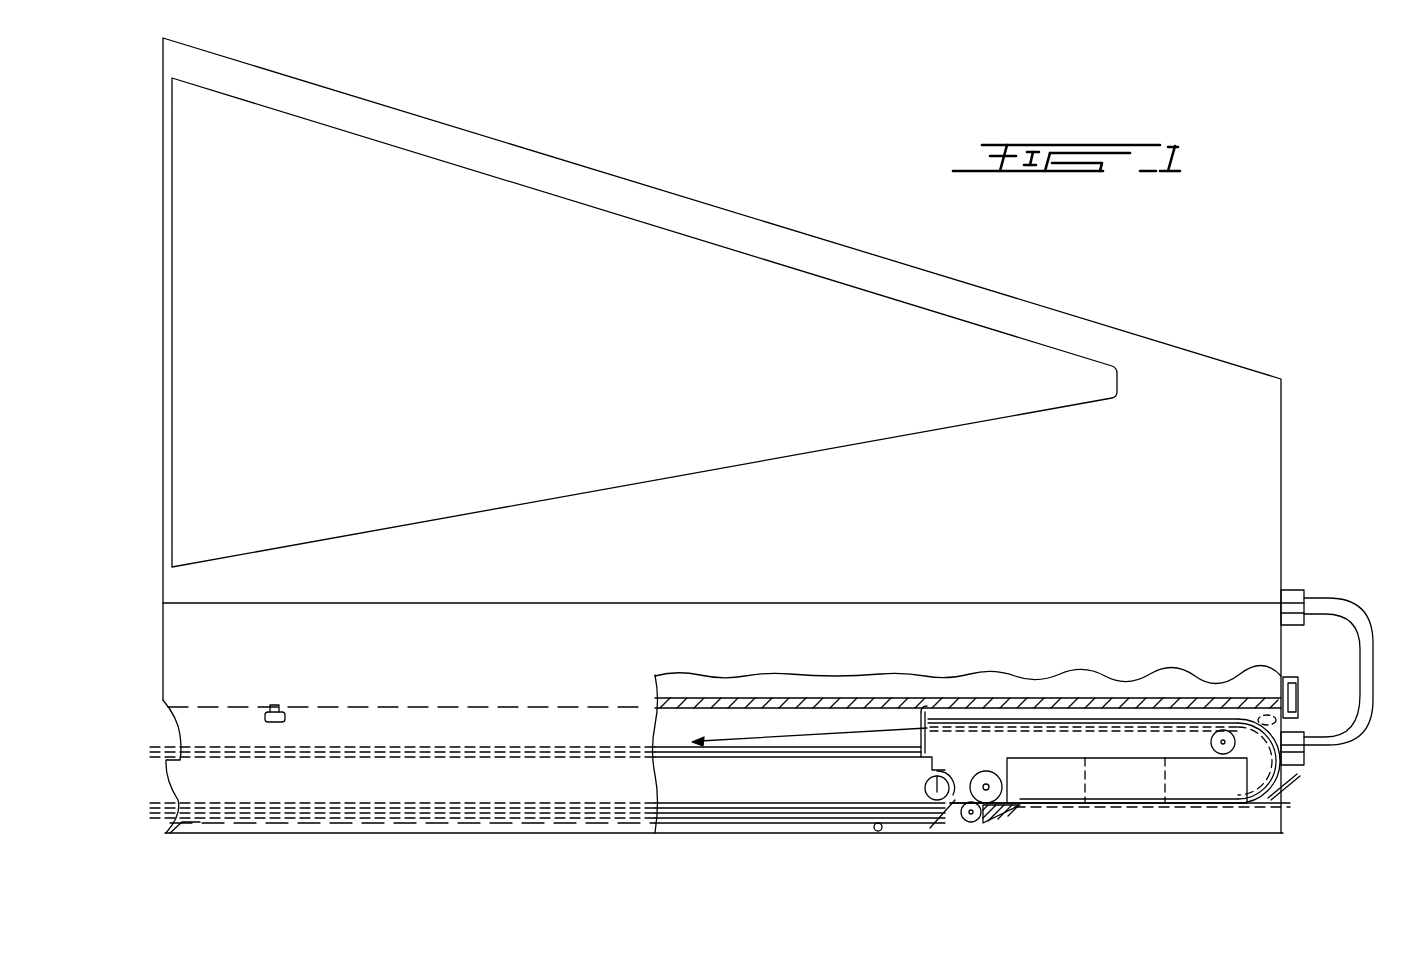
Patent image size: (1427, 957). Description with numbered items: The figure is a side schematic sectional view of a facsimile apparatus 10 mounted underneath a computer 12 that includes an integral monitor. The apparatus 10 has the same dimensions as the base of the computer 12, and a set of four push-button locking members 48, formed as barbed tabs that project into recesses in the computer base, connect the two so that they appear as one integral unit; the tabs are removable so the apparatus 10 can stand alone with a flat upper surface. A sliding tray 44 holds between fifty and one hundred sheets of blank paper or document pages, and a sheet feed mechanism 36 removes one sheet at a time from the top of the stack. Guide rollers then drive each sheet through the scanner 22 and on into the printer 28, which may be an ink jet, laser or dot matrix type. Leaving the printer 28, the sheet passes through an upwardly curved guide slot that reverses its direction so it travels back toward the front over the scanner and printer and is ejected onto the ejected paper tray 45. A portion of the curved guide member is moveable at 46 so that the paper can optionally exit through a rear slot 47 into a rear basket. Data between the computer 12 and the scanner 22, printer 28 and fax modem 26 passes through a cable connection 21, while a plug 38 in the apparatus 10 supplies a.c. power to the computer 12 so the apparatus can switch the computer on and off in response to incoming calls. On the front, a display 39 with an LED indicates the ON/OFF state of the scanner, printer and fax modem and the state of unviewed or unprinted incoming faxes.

The facsimile apparatus 10 is at (420, 836).
The computer 12 is at (222, 649).
The cable connection 21 is at (1300, 690).
The scanner 22 is at (1040, 780).
The fax modem 26 is at (1208, 780).
The printer 28 is at (1125, 782).
The sheet feed mechanism 36 is at (928, 825).
The plug 38 is at (1305, 753).
The display 39 is at (165, 702).
The sliding tray 44 is at (165, 808).
The ejected paper tray 45 is at (190, 734).
The moveable portion of curved guide member 46 is at (1297, 776).
The rear slot 47 is at (1290, 798).
The push-button locking members 48 is at (285, 716).